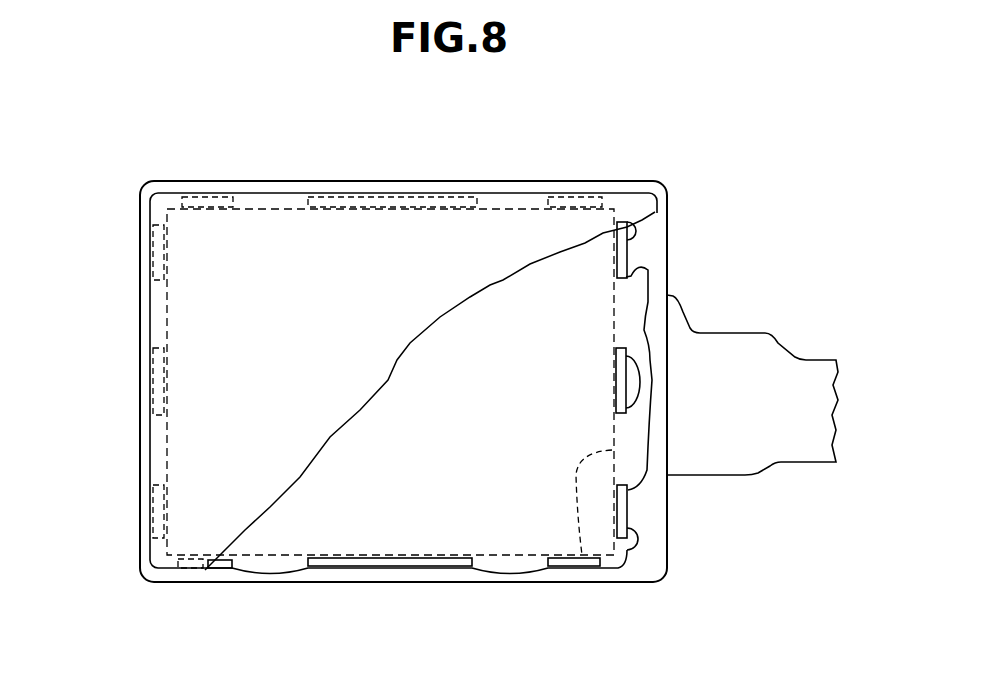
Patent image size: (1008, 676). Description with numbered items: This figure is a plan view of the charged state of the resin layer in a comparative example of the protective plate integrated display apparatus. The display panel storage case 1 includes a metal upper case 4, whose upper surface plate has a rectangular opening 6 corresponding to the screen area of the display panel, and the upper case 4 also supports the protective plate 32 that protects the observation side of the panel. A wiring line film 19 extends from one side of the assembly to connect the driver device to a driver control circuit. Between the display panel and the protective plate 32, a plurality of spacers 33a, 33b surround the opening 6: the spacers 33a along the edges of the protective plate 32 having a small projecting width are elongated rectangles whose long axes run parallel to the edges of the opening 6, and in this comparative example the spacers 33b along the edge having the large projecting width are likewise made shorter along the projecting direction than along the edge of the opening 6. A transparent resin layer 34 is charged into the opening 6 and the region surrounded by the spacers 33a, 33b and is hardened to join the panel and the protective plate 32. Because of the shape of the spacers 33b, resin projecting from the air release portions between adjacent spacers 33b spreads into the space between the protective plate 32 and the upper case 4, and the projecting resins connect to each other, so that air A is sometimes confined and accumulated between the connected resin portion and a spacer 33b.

The display panel storage case 1 is at (631, 176).
The upper case 4 is at (668, 190).
The opening 6 is at (582, 555).
The wiring line film 19 is at (810, 375).
The protective plate 32 is at (323, 225).
The spacers 33a is at (205, 198).
The spacers 33b is at (627, 247).
The transparent resin layer 34 is at (402, 437).
The air A is at (631, 382).